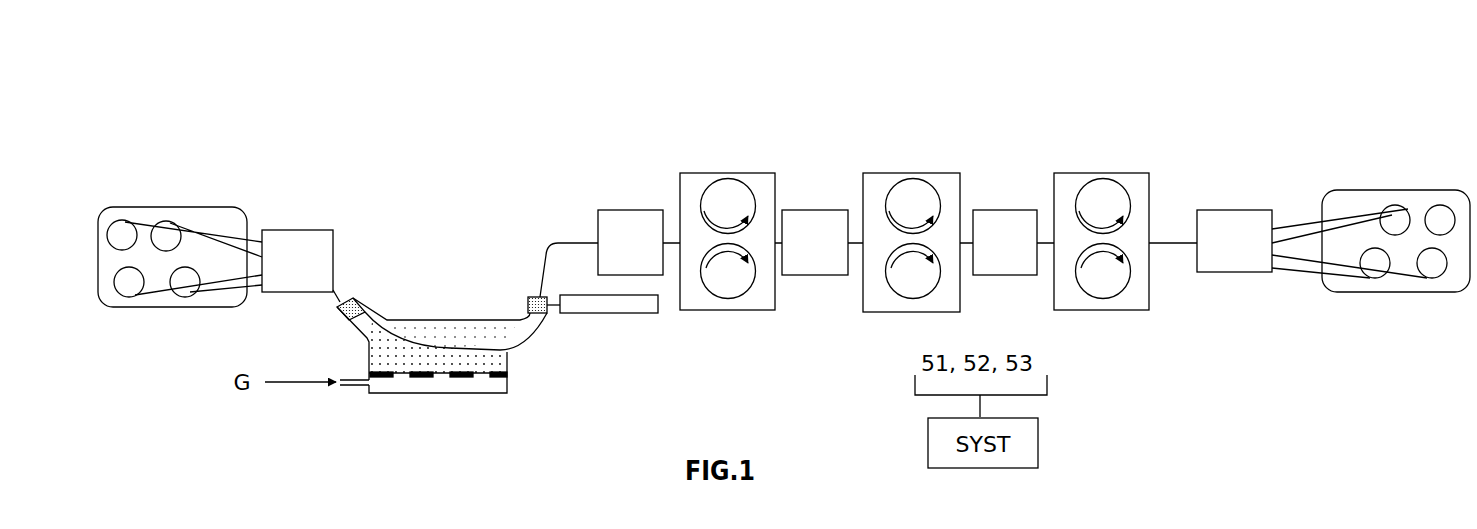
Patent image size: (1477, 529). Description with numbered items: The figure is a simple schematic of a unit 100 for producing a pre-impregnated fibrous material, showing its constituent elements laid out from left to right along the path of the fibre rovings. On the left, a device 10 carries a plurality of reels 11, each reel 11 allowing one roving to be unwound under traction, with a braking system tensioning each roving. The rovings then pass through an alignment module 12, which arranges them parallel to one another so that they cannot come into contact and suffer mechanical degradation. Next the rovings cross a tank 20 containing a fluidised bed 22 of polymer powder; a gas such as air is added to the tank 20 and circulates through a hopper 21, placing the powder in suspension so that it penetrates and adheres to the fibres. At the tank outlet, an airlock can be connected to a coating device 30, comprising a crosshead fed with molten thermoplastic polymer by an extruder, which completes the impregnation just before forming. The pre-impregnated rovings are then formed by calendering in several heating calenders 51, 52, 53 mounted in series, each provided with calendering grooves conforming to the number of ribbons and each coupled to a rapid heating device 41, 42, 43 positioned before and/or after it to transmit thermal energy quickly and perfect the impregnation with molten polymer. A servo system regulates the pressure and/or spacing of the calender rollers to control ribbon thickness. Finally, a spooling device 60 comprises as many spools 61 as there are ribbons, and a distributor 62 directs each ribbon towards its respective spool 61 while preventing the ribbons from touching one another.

The unit 100 is at (856, 96).
The device 10 is at (193, 207).
The reel 11 is at (121, 230).
The alignment module 12 is at (232, 262).
The tank 20 is at (426, 294).
The hopper 21 is at (507, 377).
The fluidised bed 22 is at (463, 337).
The coating device 30 is at (620, 313).
The rapid heating device 41 is at (630, 242).
The rapid heating device 42 is at (815, 242).
The rapid heating device 43 is at (1005, 242).
The heating calender 51 is at (747, 173).
The heating calender 52 is at (923, 173).
The heating calender 53 is at (1120, 173).
The spooling device 60 is at (1348, 292).
The spool 61 is at (1442, 212).
The distributor 62 is at (1312, 243).